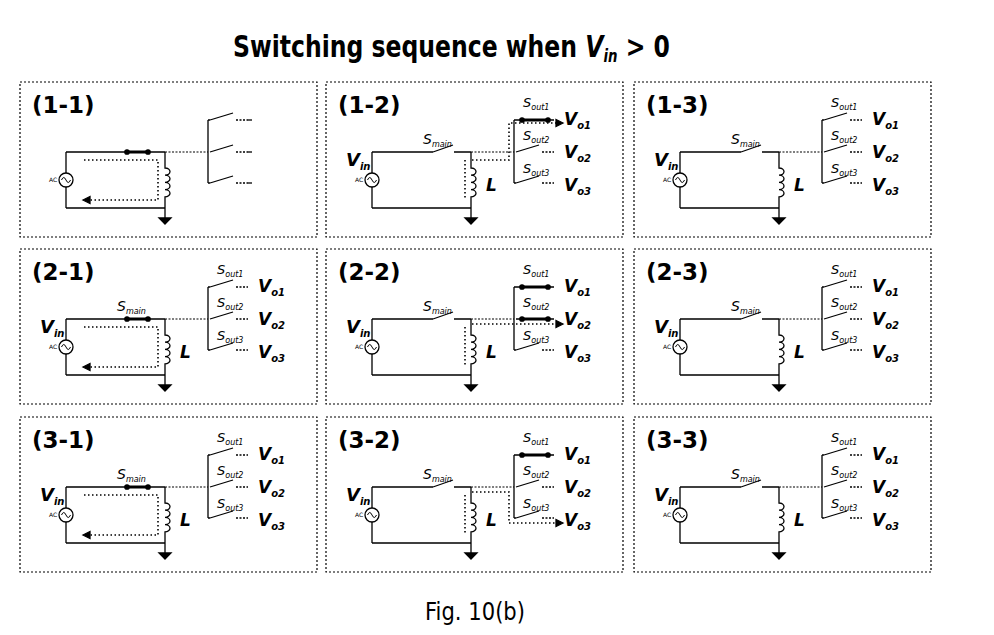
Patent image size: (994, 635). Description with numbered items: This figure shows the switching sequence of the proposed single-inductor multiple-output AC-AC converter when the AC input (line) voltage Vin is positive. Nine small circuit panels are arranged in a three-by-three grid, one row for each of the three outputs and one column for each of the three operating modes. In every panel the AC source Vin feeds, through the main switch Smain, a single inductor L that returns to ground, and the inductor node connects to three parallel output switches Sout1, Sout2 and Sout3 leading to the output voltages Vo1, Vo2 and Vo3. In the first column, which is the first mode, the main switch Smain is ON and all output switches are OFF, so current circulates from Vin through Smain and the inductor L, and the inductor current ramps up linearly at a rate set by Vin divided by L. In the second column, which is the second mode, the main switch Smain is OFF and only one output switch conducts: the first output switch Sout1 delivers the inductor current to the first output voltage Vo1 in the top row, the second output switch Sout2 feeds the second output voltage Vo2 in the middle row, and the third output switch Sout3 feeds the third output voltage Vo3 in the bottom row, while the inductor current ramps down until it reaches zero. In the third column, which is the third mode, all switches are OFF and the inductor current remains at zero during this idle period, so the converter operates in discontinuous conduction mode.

The AC input (line) voltage Vin is at (56, 178).
The main switch Smain is at (133, 142).
The inductor L is at (175, 188).
The first output switch Sout1 is at (229, 107).
The second output switch Sout2 is at (229, 140).
The third output switch Sout3 is at (229, 172).
The first output voltage Vo1 is at (266, 120).
The second output voltage Vo2 is at (266, 153).
The third output voltage Vo3 is at (266, 186).